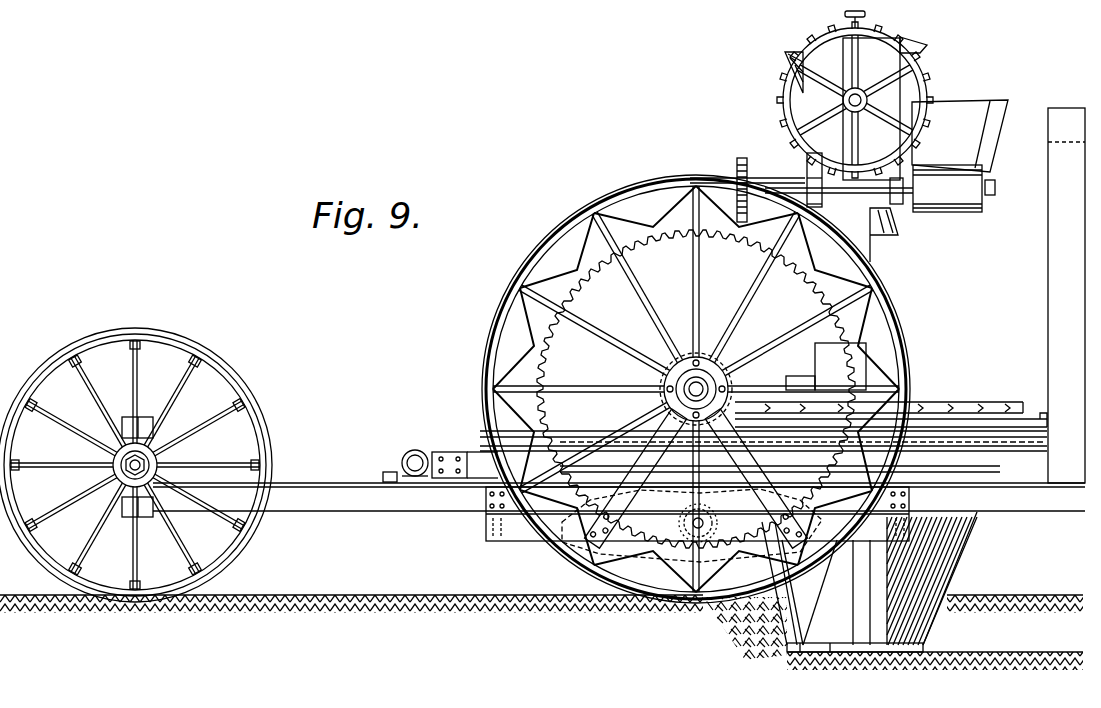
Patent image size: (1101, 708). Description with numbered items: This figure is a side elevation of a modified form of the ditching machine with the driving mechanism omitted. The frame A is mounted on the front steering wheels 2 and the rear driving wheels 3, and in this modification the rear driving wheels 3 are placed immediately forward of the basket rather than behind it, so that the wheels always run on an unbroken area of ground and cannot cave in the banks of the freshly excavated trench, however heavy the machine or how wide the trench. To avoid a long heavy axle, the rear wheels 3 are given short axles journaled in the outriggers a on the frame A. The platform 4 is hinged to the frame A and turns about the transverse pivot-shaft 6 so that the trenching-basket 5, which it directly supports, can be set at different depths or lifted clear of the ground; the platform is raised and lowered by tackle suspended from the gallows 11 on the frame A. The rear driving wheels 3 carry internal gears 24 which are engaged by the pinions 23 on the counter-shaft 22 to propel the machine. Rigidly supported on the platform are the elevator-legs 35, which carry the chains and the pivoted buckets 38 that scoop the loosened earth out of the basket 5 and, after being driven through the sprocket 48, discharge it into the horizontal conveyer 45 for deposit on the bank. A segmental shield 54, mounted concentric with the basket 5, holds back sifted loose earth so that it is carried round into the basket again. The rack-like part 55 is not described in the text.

The front steering wheels 2 is at (142, 330).
The rear driving wheels 3 is at (612, 196).
The platform 4 is at (468, 452).
The trenching-basket 5 is at (842, 572).
The transverse pivot-shaft 6 is at (415, 450).
The gallows 11 is at (1066, 295).
The counter-shaft 22 is at (682, 535).
The pinions 23 is at (743, 522).
The internal gears 24 is at (592, 277).
The elevator-legs 35 is at (852, 197).
The buckets 38 is at (893, 238).
The horizontal conveyer 45 is at (947, 213).
The sprocket 48 is at (837, 166).
The segmental shield 54 is at (960, 537).
The rack bar 55 is at (774, 181).
The frame A is at (336, 488).
The outriggers a is at (521, 541).